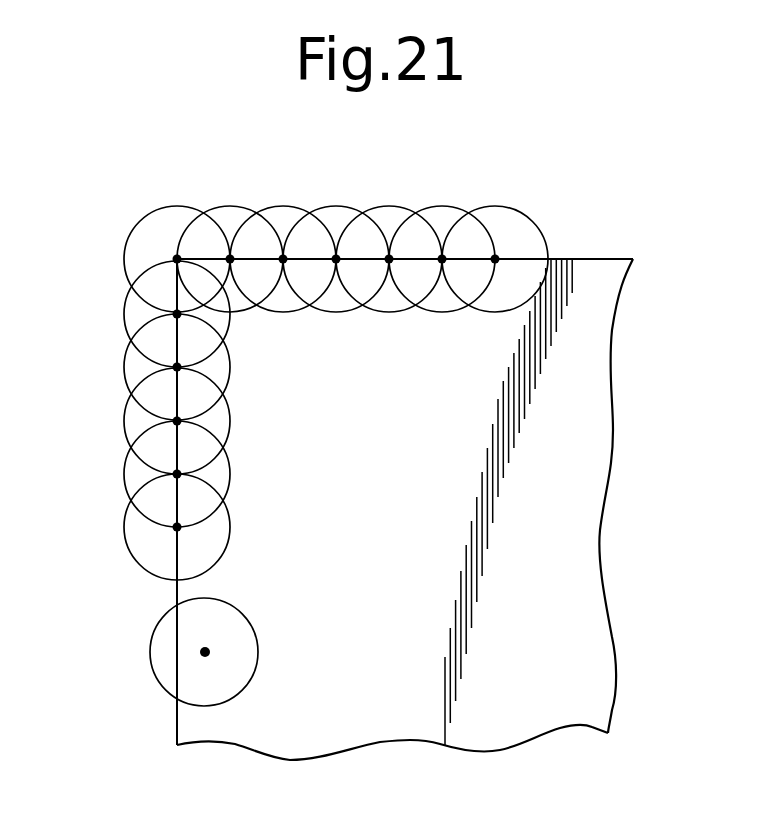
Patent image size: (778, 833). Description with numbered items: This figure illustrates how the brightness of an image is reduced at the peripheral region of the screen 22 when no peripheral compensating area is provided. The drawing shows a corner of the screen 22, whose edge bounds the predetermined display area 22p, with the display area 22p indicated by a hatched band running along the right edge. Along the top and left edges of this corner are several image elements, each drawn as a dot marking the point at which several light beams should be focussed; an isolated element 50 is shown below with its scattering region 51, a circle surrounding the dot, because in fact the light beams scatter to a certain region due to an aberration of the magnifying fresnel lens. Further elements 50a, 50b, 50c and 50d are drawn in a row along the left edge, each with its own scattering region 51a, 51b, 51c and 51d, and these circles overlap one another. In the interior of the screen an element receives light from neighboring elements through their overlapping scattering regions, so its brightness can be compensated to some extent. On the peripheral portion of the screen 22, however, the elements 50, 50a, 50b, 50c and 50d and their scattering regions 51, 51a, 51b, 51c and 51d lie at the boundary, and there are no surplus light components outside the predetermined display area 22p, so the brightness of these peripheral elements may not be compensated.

The screen 22 is at (600, 270).
The predetermined display area 22p is at (572, 275).
The element 50 is at (208, 650).
The element 50a is at (177, 527).
The element 50b is at (177, 474).
The element 50c is at (177, 422).
The element 50d is at (177, 367).
The scattering region 51 is at (251, 681).
The scattering region 51a is at (220, 556).
The scattering region 51b is at (226, 527).
The scattering region 51c is at (225, 468).
The scattering region 51d is at (226, 420).